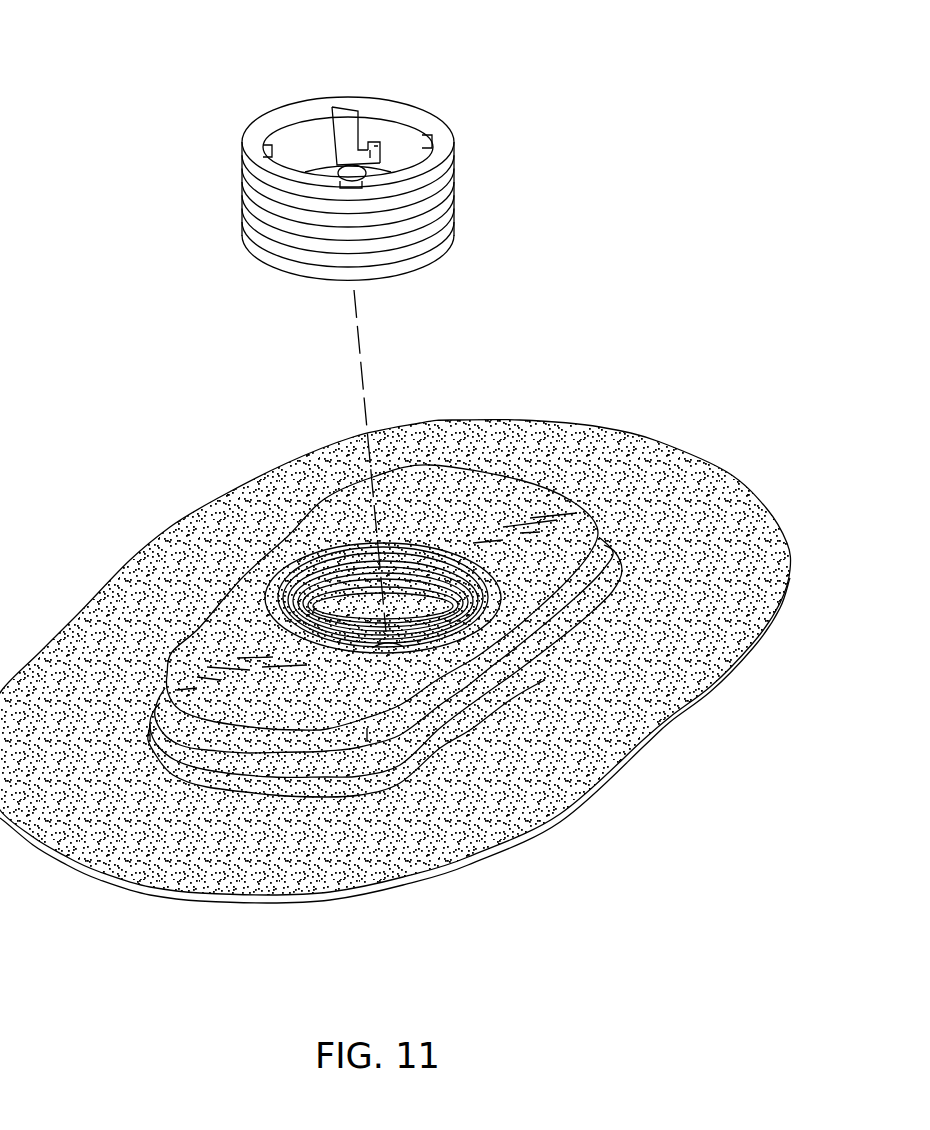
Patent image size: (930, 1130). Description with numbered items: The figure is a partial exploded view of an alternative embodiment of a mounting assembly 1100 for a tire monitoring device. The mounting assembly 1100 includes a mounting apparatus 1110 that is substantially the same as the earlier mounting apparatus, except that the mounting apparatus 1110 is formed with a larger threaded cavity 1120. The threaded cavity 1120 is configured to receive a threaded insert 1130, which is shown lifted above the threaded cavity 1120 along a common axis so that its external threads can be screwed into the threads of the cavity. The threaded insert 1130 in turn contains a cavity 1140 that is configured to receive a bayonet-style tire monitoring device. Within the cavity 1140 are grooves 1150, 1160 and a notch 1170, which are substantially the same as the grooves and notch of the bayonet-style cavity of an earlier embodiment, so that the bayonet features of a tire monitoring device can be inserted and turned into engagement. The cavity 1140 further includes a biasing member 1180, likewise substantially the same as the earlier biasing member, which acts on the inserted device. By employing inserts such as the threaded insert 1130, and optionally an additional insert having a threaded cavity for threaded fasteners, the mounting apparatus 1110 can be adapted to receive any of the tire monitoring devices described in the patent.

The mounting assembly 1100 is at (88, 94).
The mounting apparatus 1110 is at (443, 840).
The threaded cavity 1120 is at (311, 580).
The threaded insert 1130 is at (428, 128).
The cavity 1140 is at (307, 142).
The groove 1150 is at (344, 113).
The groove 1160 is at (364, 140).
The hook 1170 is at (372, 142).
The biasing member 1180 is at (332, 176).